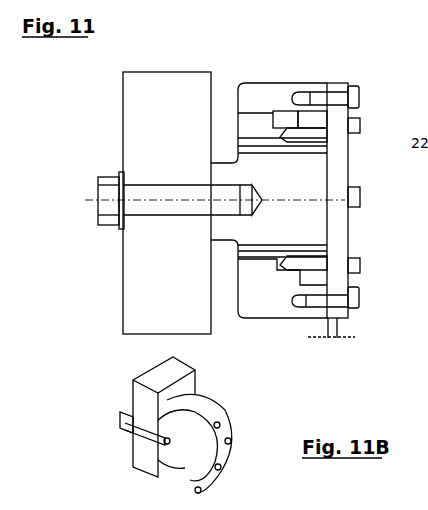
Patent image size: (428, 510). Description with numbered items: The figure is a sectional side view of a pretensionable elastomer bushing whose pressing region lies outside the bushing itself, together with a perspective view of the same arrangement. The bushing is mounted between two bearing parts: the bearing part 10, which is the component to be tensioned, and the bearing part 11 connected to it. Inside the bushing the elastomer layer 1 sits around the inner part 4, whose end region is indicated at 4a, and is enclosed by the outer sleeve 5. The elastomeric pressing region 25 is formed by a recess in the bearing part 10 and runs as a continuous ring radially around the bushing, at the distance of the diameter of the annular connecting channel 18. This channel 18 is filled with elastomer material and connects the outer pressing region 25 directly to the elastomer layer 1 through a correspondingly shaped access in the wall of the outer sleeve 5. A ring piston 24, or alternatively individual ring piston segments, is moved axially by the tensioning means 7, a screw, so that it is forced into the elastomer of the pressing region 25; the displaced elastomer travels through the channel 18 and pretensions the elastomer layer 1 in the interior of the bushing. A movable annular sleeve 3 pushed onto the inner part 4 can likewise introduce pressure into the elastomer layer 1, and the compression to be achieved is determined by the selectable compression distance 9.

The bearing part 11 is at (172, 90).
The bearing part 10 is at (245, 95).
The elastomer layer 1 is at (268, 148).
The elastomeric pressing region 25 is at (283, 120).
The ring piston 24 is at (312, 120).
The tensioning means 7 is at (355, 95).
The connecting channel 18 is at (283, 137).
The inner part 4 is at (208, 193).
The shaft shoulder 4a is at (236, 249).
The outer sleeve 5 is at (258, 278).
The compression distance 9 is at (333, 338).
The annular sleeve 3 is at (318, 265).